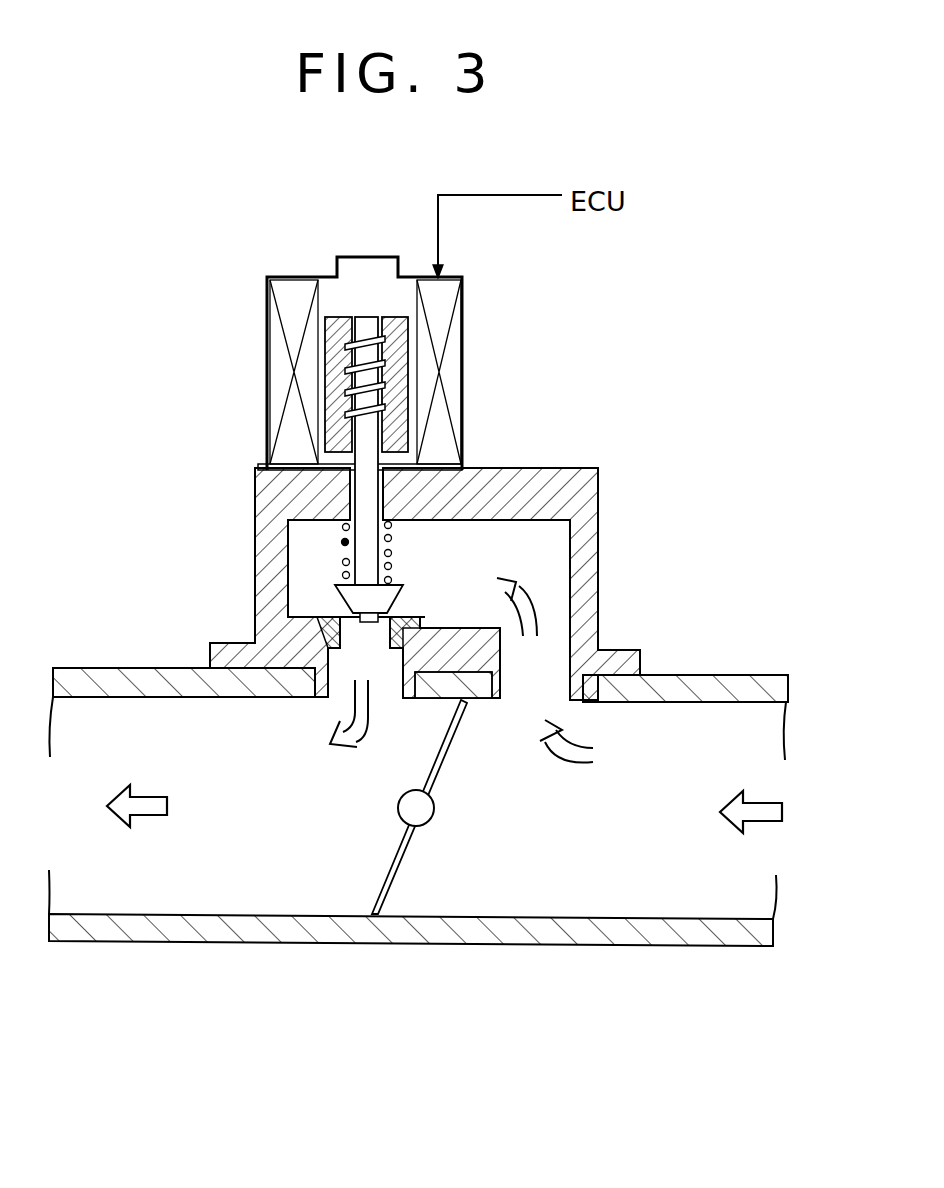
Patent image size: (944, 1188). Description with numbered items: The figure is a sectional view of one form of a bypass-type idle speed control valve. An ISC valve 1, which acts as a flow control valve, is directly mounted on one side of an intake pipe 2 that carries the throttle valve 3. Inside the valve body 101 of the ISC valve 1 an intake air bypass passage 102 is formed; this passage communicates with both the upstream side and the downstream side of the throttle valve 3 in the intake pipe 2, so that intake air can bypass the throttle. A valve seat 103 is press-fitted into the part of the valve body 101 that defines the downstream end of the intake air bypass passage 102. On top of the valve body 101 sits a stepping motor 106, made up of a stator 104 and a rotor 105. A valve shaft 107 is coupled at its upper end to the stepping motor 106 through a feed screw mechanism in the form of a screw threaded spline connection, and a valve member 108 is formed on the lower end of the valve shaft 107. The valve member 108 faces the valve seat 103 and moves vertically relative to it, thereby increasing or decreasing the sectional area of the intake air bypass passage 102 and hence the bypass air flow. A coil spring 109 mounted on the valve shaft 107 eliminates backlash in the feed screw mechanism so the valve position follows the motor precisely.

The ISC valve 1 is at (183, 483).
The intake pipe 2 is at (90, 668).
The throttle valve 3 is at (400, 857).
The valve body 101 is at (598, 523).
The intake air bypass passage 102 is at (507, 551).
The valve seat 103 is at (333, 618).
The stator 104 is at (288, 293).
The rotor 105 is at (393, 365).
The stepping motor 106 is at (483, 315).
The valve shaft 107 is at (363, 442).
The valve member 108 is at (352, 594).
The coil spring 109 is at (345, 542).